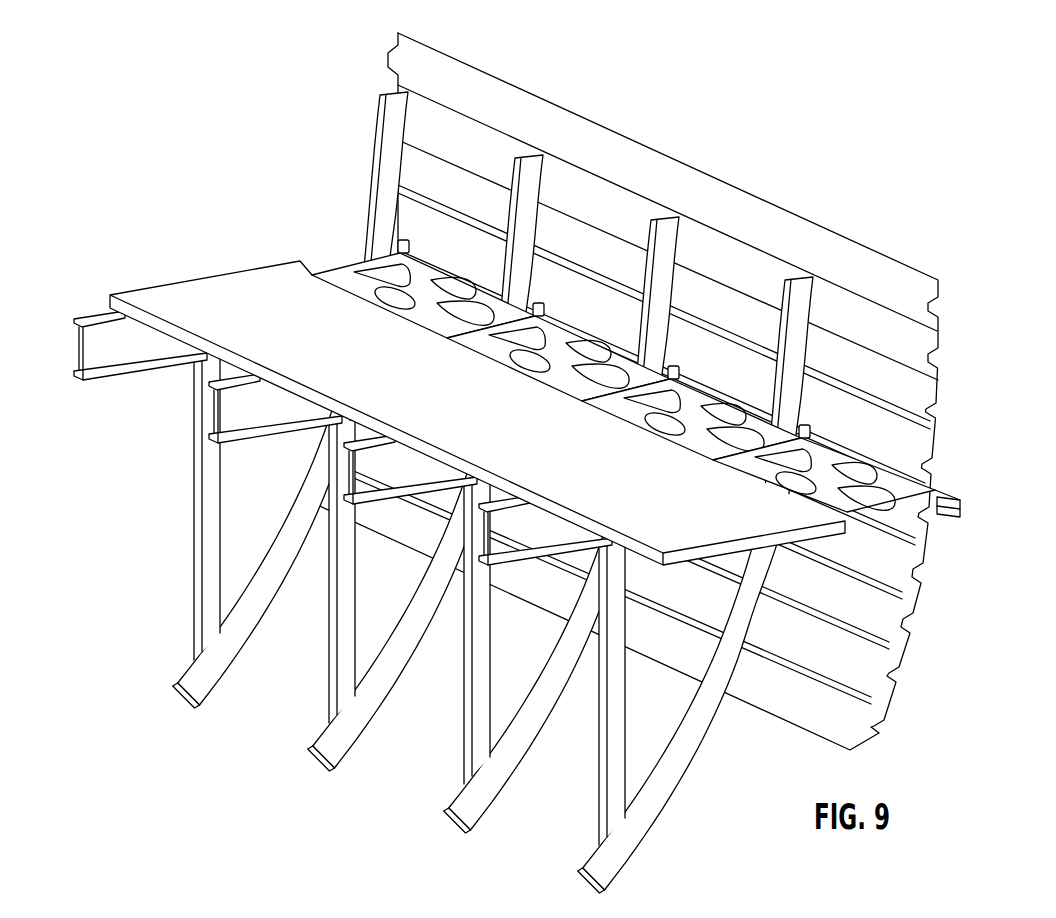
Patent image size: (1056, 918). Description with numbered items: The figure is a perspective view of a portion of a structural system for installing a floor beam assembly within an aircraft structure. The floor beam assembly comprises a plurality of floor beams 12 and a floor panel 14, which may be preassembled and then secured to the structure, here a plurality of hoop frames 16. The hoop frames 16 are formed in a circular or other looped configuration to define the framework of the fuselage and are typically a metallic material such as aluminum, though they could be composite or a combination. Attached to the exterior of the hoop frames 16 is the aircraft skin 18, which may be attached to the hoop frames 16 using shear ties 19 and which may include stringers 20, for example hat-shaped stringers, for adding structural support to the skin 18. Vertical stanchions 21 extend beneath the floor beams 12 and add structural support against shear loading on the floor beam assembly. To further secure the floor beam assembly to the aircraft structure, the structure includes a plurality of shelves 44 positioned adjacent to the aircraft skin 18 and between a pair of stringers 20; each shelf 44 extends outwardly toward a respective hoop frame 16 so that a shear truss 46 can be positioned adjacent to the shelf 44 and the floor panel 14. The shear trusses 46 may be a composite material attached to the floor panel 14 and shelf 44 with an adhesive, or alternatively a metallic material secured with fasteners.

The floor beam 12 is at (113, 378).
The floor panel 14 is at (190, 293).
The hoop frame 16 is at (688, 762).
The aircraft skin 18 is at (938, 333).
The shear tie 19 is at (823, 382).
The stringer 20 is at (937, 407).
The vertical stanchion 21 is at (193, 578).
The shelf 44 is at (949, 493).
The shear truss 46 is at (345, 264).